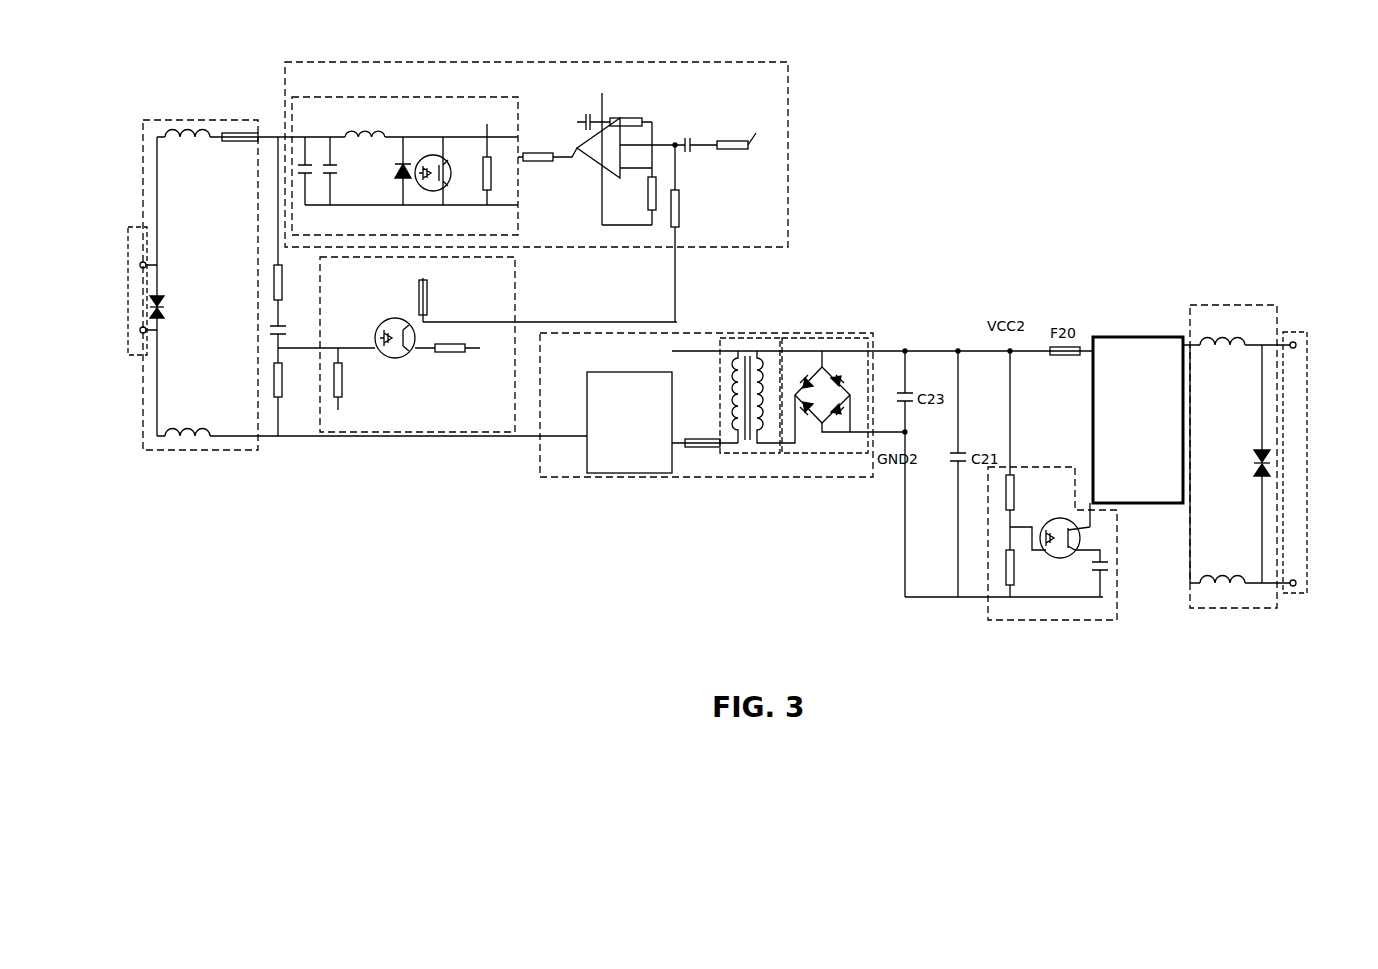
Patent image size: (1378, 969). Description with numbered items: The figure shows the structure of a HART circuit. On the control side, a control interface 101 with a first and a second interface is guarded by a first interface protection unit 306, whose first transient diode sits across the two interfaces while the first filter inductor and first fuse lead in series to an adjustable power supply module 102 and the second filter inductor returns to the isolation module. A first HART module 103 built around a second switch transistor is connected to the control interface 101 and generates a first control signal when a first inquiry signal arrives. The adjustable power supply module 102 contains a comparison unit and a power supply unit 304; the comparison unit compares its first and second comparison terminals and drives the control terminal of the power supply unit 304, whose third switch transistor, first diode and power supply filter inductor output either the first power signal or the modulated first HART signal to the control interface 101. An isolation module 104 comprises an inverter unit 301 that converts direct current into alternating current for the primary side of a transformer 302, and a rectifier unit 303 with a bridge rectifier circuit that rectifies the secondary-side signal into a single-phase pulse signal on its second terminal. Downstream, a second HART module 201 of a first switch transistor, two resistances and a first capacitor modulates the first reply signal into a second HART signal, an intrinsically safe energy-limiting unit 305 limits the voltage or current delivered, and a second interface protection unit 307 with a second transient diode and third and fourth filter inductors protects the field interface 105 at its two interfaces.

The control interface 101 is at (127, 296).
The adjustable power supply module 102 is at (790, 205).
The first HART module 103 is at (515, 275).
The isolation module 104 is at (806, 433).
The field interface 105 is at (1307, 435).
The second HART module 201 is at (1033, 622).
The inverter unit 301 is at (673, 463).
The transformer 302 is at (763, 453).
The rectifier unit 303 is at (817, 455).
The power supply unit 304 is at (518, 172).
The intrinsically safe energy-limiting unit 305 is at (1187, 477).
The first interface protection unit 306 is at (262, 440).
The second interface protection unit 307 is at (1280, 598).